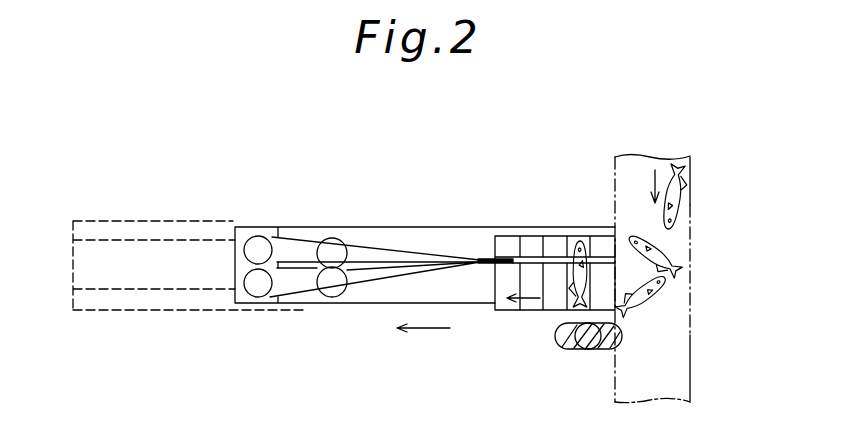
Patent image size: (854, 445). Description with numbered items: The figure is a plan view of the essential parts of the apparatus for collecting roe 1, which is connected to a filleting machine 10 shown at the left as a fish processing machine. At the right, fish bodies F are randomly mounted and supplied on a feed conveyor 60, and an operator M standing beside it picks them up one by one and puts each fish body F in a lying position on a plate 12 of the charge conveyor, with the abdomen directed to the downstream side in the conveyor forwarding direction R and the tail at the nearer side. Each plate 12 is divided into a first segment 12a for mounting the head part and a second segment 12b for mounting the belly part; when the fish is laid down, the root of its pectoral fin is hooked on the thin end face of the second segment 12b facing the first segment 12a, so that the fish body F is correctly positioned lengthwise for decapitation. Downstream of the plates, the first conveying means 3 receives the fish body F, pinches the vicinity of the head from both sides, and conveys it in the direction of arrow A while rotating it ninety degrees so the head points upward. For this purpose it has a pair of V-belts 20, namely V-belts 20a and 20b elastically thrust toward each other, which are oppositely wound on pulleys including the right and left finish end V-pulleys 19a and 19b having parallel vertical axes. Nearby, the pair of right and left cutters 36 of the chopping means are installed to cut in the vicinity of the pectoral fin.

The apparatus for collecting roe 1 is at (285, 166).
The filleting machine 10 is at (149, 313).
The finish end V-pulley 19a is at (255, 292).
The finish end V-pulley 19b is at (262, 238).
The cutters 36 is at (337, 297).
The V-belts 20 is at (391, 222).
The V-belt 20a is at (386, 267).
The V-belt 20b is at (362, 191).
The first conveying means 3 is at (461, 243).
The conveying direction A is at (425, 330).
The plates 12 is at (555, 229).
The first segment 12a is at (582, 215).
The second segment 12b is at (550, 281).
The conveyor forwarding direction R is at (530, 301).
The fish body F is at (568, 288).
The operator M is at (590, 347).
The feed conveyor 60 is at (690, 338).